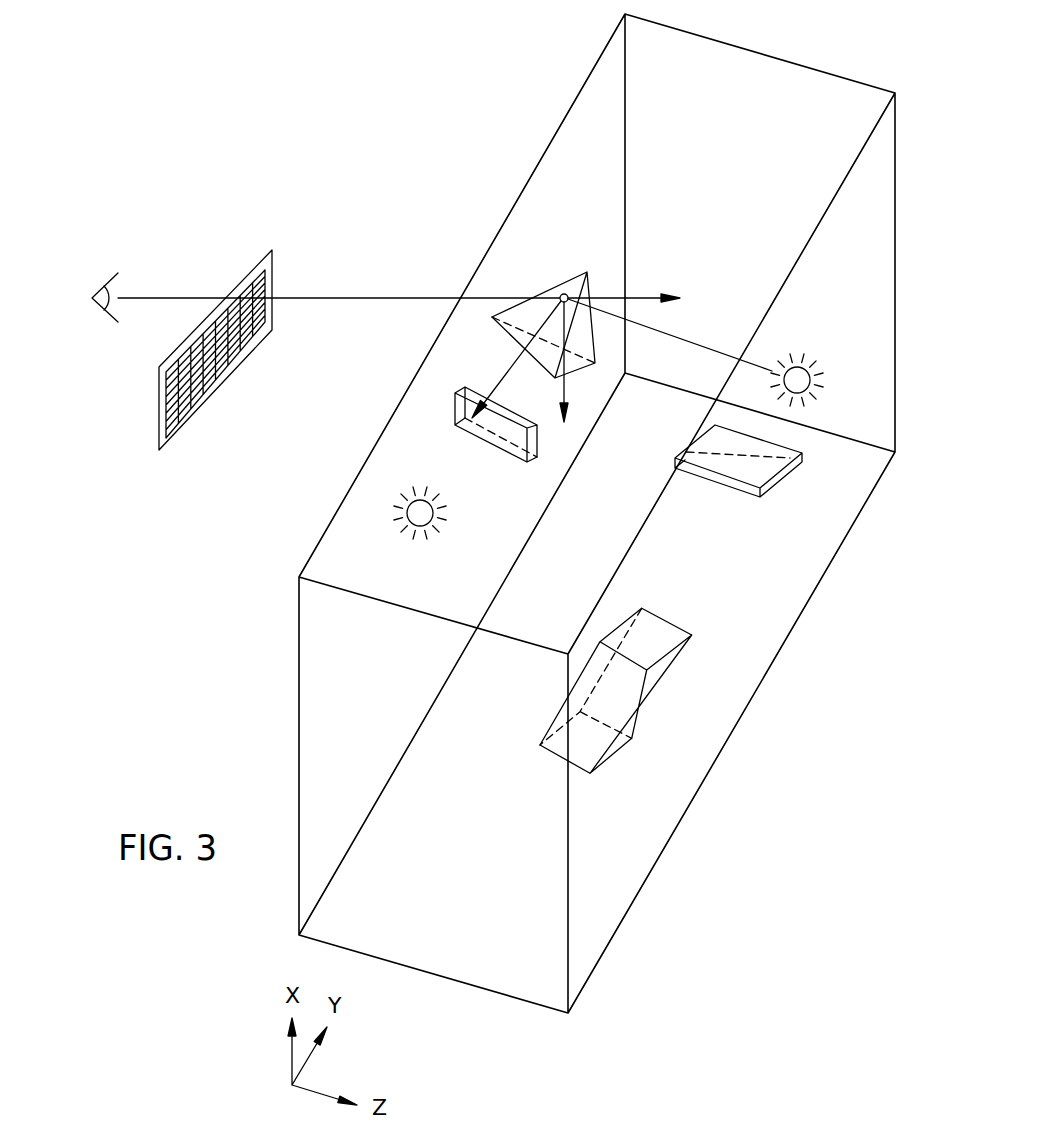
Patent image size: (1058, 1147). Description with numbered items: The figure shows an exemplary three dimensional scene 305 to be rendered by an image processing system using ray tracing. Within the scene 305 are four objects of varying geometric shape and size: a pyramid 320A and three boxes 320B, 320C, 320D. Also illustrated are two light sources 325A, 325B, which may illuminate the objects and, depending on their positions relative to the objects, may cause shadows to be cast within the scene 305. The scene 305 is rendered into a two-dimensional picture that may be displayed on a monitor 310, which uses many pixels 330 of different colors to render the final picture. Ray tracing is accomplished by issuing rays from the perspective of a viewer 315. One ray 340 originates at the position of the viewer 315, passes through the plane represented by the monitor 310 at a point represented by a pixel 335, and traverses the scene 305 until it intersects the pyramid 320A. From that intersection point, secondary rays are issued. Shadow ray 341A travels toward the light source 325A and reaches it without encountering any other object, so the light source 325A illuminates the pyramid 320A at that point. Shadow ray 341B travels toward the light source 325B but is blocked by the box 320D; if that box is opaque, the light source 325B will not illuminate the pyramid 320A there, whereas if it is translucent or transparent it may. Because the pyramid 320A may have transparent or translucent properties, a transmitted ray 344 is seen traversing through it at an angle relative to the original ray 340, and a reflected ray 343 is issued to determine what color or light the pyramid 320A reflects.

The three dimensional scene 305 is at (540, 1050).
The monitor 310 is at (272, 267).
The viewer 315 is at (109, 277).
The pyramid 320A is at (575, 272).
The box 320B is at (732, 490).
The box 320C is at (552, 747).
The box 320D is at (503, 450).
The light source 325A is at (797, 352).
The light source 325B is at (415, 530).
The pixels 330 is at (158, 398).
The pixel 335 is at (275, 318).
The ray 340 is at (395, 297).
The shadow ray 341A is at (717, 350).
The shadow ray 341B is at (519, 357).
The reflected ray 343 is at (567, 388).
The transmitted ray 344 is at (643, 298).